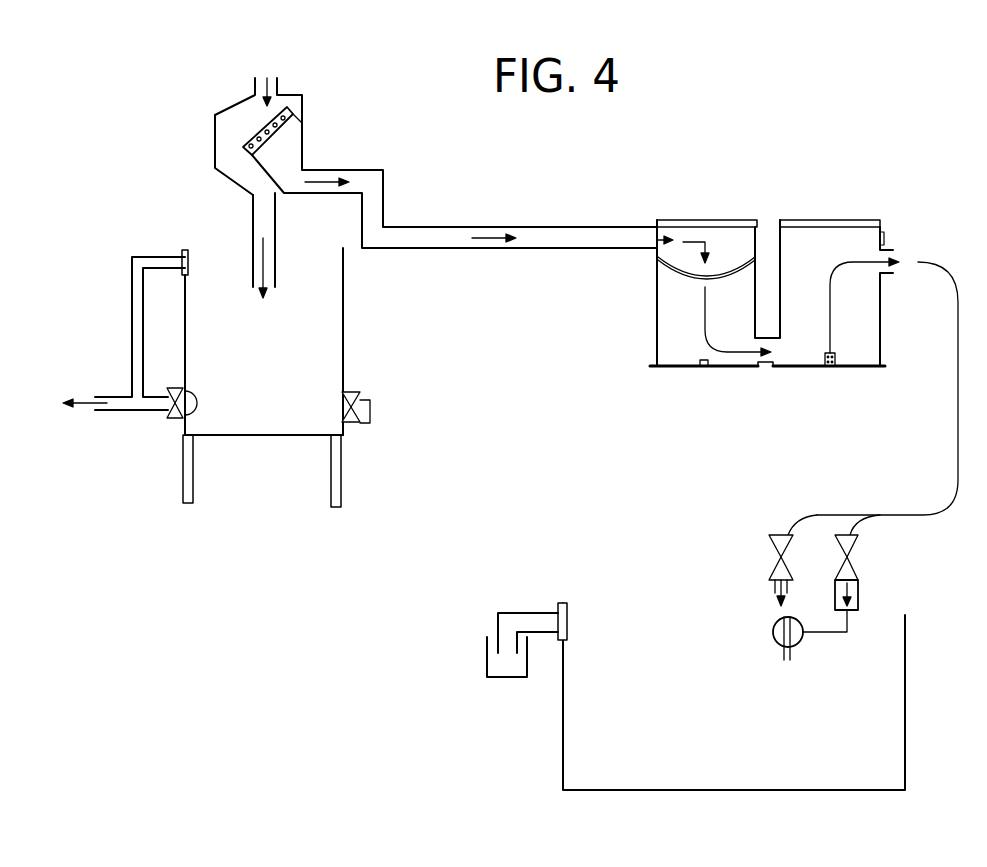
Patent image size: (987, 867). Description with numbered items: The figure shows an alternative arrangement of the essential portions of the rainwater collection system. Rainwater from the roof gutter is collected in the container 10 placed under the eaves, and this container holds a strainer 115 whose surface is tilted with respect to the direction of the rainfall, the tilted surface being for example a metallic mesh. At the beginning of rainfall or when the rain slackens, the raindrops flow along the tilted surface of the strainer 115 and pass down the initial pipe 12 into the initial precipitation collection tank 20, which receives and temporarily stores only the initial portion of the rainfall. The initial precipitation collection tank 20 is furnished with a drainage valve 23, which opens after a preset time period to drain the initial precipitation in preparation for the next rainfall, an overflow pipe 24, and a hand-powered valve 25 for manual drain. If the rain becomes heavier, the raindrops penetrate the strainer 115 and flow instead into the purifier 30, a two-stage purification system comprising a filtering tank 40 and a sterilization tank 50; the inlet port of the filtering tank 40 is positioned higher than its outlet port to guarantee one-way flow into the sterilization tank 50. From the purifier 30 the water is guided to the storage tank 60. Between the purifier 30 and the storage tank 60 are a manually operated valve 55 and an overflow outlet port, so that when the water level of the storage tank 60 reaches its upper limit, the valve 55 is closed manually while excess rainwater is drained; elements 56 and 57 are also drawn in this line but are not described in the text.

The container 10 is at (237, 104).
The strainer 115 is at (263, 144).
The initial pipe 12 is at (253, 232).
The initial precipitation collection tank 20 is at (343, 306).
The drainage valve 23 is at (173, 420).
The overflow pipe 24 is at (158, 255).
The hand-powered valve 25 is at (350, 392).
The purifier 30 is at (774, 239).
The filtering tank 40 is at (708, 220).
The sterilization tank 50 is at (855, 220).
The manually operated valve 55 is at (768, 540).
The flow meter 56 is at (860, 590).
The pump 57 is at (772, 632).
The storage tank 60 is at (905, 728).